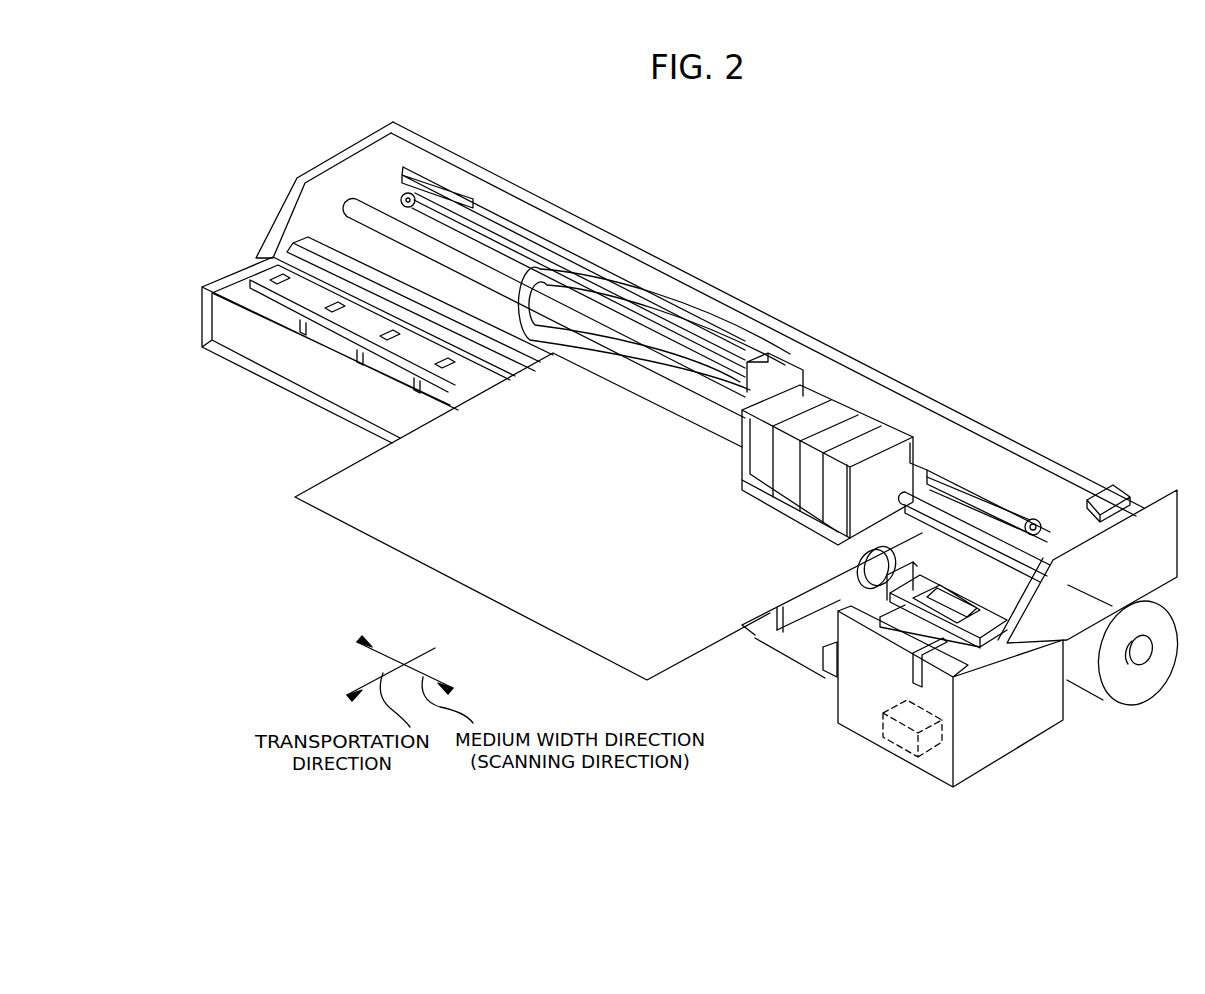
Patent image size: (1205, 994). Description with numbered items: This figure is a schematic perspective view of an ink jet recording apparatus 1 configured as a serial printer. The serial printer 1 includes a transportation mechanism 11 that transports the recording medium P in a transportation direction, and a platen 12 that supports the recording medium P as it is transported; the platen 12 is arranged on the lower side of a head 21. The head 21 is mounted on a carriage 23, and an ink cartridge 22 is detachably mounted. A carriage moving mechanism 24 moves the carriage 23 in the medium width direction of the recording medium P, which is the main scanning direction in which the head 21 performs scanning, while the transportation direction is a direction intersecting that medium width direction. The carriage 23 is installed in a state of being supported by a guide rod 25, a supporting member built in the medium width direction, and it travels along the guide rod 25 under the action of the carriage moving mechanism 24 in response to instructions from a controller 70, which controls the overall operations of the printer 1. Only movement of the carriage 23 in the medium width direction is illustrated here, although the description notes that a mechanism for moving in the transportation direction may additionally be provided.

The ink jet recording apparatus 1 is at (657, 250).
The transportation mechanism 11 is at (1093, 700).
The platen 12 is at (228, 303).
The head 21 is at (790, 512).
The ink cartridge 22 is at (785, 405).
The carriage 23 is at (903, 455).
The carriage moving mechanism 24 is at (990, 478).
The guide rod 25 is at (362, 205).
The controller 70 is at (903, 750).
The recording medium P is at (400, 536).